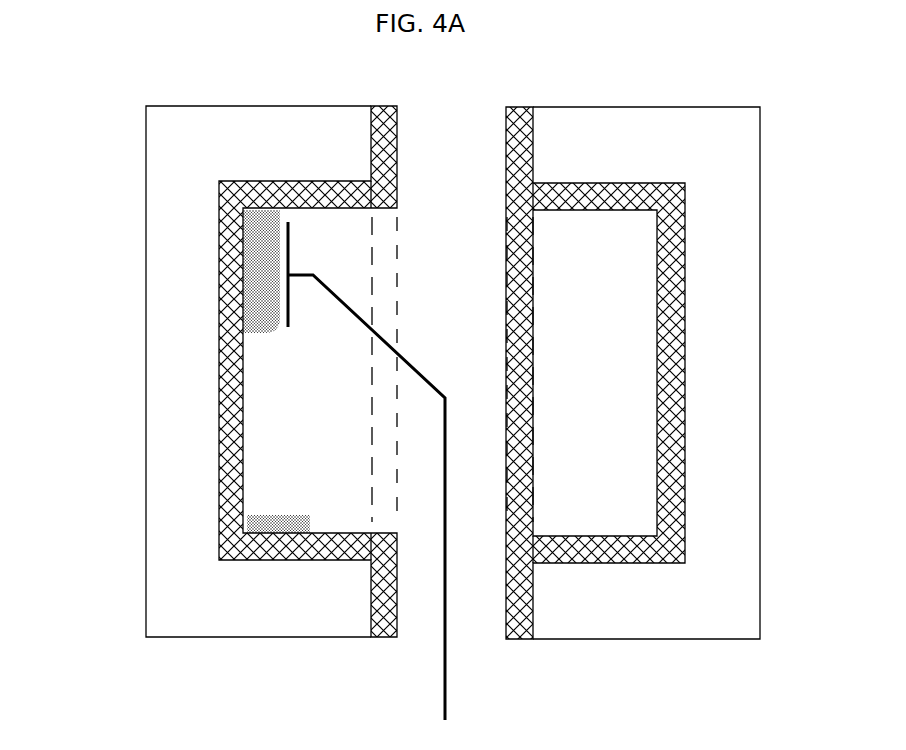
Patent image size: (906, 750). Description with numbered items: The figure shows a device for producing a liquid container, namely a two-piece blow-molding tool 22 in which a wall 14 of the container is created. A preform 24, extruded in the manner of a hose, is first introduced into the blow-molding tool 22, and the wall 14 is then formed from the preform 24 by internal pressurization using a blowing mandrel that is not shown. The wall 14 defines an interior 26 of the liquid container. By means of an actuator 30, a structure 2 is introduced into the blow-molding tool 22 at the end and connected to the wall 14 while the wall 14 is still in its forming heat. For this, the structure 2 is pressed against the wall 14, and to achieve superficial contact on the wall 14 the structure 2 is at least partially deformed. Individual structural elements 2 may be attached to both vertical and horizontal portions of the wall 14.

The structure 2 is at (250, 232).
The wall 14 is at (219, 278).
The blow-molding tool 22 is at (178, 327).
The preform 24 is at (392, 253).
The interior 26 is at (312, 381).
The actuator 30 is at (445, 657).